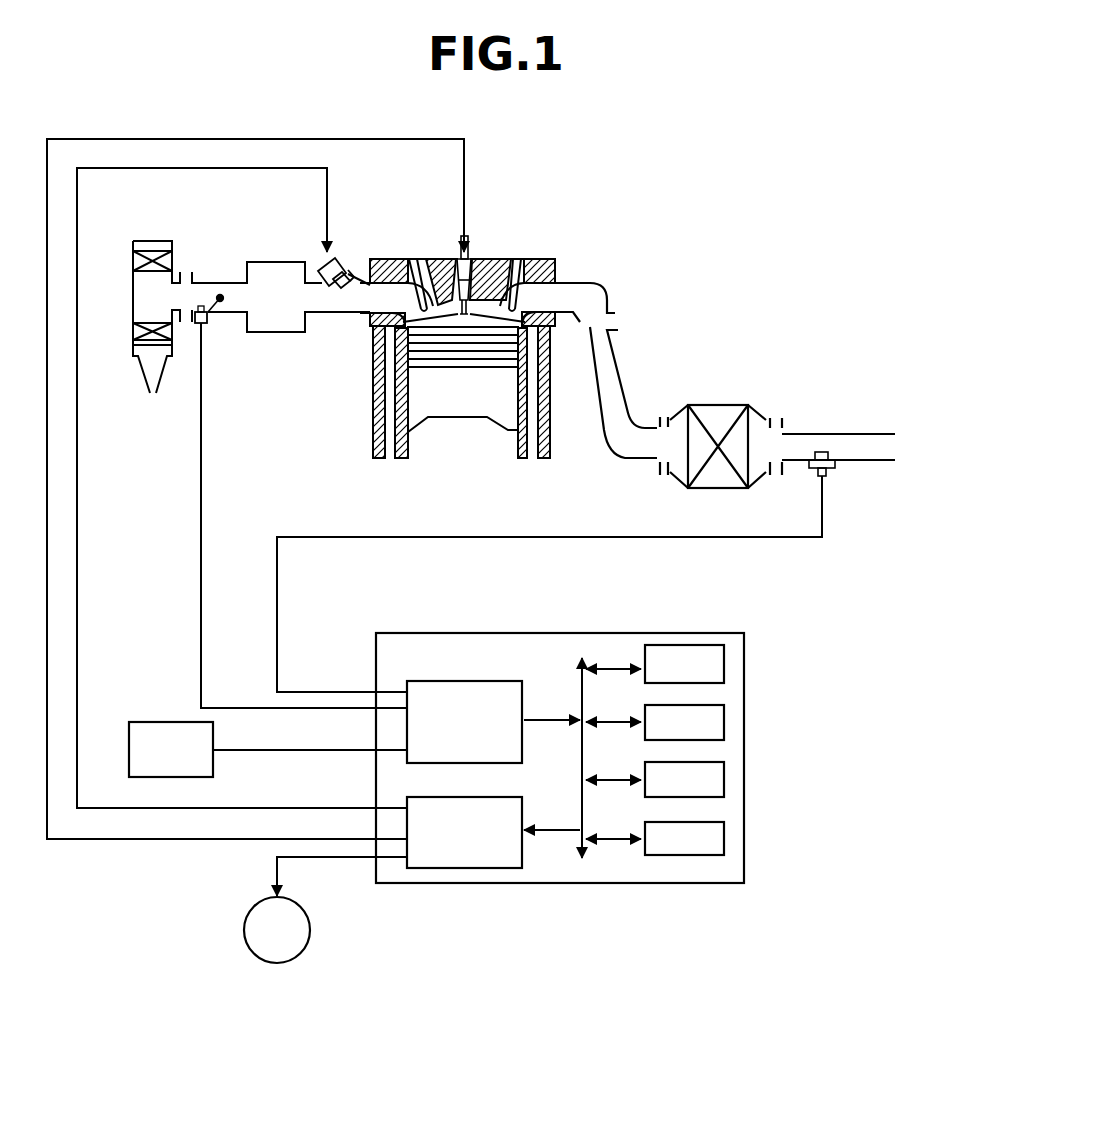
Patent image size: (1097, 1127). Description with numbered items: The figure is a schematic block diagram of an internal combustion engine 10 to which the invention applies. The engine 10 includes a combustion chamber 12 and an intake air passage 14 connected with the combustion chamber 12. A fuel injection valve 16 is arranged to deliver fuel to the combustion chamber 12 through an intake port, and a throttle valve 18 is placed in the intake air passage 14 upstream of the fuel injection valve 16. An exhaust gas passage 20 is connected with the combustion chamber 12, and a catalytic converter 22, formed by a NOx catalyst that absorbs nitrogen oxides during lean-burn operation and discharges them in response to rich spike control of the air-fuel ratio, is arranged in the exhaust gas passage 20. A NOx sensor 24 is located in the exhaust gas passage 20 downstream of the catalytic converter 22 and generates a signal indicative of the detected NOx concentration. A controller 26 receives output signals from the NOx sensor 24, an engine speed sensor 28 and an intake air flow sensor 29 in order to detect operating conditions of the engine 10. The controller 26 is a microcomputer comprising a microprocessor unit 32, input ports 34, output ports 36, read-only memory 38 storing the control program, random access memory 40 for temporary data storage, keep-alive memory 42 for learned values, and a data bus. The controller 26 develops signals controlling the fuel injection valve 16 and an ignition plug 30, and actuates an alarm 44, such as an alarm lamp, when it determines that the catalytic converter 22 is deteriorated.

The internal combustion engine 10 is at (556, 418).
The combustion chamber 12 is at (458, 330).
The intake air passage 14 is at (203, 272).
The fuel injection valve 16 is at (340, 262).
The throttle valve 18 is at (221, 297).
The exhaust gas passage 20 is at (620, 365).
The catalytic converter 22 is at (717, 405).
The NOx sensor 24 is at (833, 471).
The controller 26 is at (688, 630).
The engine speed sensor 28 is at (163, 722).
The intake air flow sensor 29 is at (208, 325).
The ignition plug 30 is at (471, 266).
The microprocessor unit (MPU) 32 is at (725, 665).
The input ports 34 is at (468, 681).
The output ports 36 is at (463, 868).
The read-only memory (ROM) 38 is at (725, 722).
The random access memory (RAM) 40 is at (725, 780).
The keep-alive memory 42 is at (725, 838).
The alarm 44 is at (247, 913).